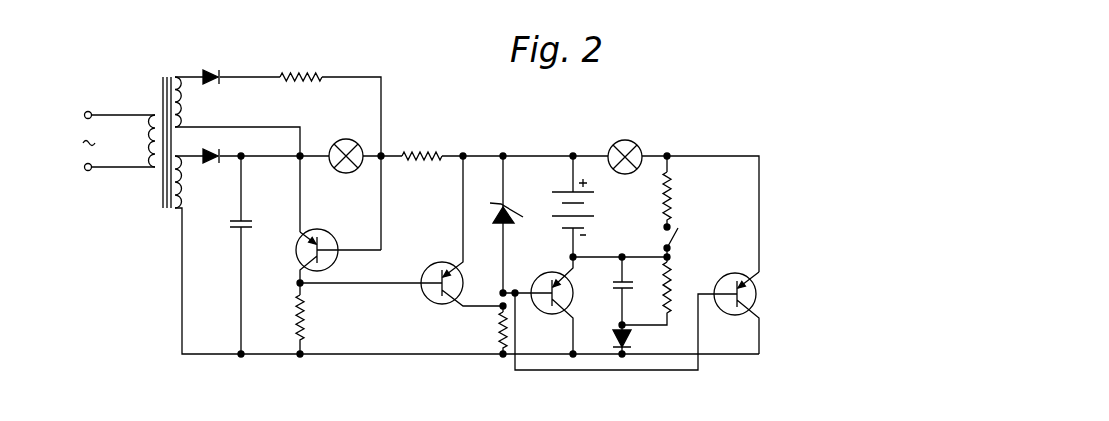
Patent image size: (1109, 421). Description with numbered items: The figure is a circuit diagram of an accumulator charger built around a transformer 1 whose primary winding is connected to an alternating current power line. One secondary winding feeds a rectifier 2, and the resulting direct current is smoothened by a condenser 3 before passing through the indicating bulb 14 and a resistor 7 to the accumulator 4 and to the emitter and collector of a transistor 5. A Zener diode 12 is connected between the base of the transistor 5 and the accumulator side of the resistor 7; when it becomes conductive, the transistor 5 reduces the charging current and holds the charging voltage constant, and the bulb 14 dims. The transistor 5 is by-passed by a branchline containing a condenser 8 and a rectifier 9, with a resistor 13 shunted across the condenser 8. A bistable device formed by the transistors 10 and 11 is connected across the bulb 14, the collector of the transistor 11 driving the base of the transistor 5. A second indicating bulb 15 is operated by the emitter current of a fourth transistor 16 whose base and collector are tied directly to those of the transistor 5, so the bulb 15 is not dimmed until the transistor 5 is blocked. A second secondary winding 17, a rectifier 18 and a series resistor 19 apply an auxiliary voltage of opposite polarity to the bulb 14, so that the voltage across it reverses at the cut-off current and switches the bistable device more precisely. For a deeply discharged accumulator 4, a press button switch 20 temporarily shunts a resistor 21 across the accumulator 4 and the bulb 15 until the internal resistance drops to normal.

The transformer 1 is at (118, 158).
The rectifier 2 is at (212, 164).
The condenser 3 is at (233, 233).
The accumulator 4 is at (593, 203).
The transistor 5 is at (547, 304).
The resistor 7 is at (420, 148).
The condenser 8 is at (617, 293).
The rectifier 9 is at (635, 337).
The transistor 10 is at (332, 257).
The transistor 11 is at (433, 293).
The Zener diode 12 is at (512, 228).
The resistor 13 is at (675, 290).
The indicating bulb 14 is at (349, 139).
The second indicating bulb 15 is at (628, 143).
The fourth transistor 16 is at (728, 308).
The second secondary winding 17 is at (184, 110).
The rectifier 18 is at (214, 68).
The resistor 19 is at (295, 73).
The press button switch 20 is at (678, 236).
The resistor 21 is at (675, 191).